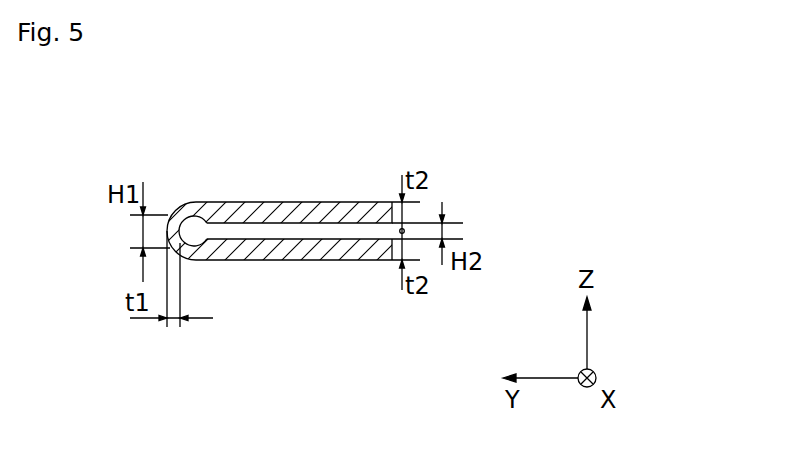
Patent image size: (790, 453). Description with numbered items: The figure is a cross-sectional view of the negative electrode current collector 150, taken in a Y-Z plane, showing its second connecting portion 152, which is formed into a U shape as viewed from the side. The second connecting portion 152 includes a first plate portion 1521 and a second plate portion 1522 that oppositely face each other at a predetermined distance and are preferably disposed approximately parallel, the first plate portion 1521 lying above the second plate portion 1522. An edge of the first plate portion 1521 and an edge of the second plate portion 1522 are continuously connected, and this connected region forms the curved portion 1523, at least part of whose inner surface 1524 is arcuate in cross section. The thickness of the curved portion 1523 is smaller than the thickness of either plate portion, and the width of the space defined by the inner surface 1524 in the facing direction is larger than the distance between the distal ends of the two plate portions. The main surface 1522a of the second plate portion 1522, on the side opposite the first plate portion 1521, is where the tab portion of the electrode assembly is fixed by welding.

The negative electrode current collector 150 is at (321, 137).
The second connecting portion 152 is at (199, 139).
The first plate portion 1521 is at (234, 202).
The second plate portion 1522 is at (277, 260).
The main surface of second plate portion 1522a is at (340, 260).
The curved portion 1523 is at (167, 226).
The inner surface of curved portion 1524 is at (207, 245).